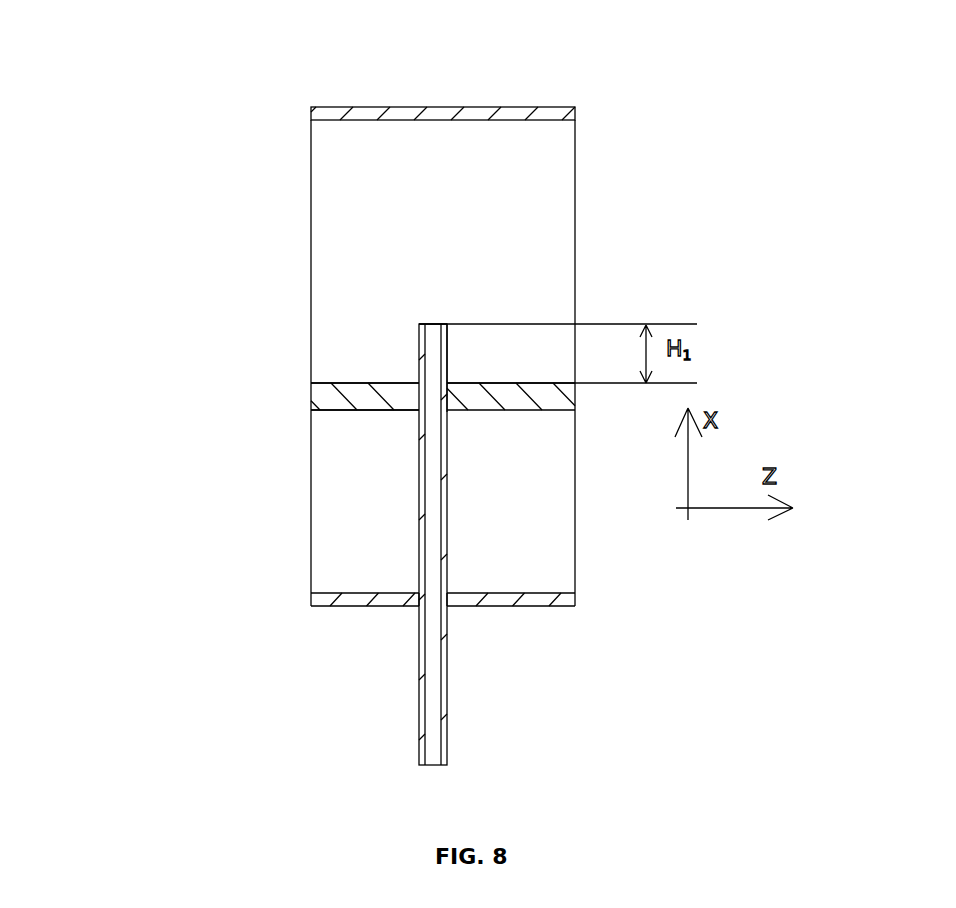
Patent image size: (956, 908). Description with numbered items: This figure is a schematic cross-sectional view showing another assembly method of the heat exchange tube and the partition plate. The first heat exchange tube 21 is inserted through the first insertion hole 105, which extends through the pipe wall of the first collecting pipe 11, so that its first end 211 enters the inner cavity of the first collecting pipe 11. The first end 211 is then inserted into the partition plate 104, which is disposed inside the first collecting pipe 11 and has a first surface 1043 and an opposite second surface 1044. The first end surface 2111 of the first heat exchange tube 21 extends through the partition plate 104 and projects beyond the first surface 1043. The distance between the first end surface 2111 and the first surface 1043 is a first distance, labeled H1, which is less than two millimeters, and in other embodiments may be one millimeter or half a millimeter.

The first collecting pipe 11 is at (463, 108).
The partition plate 104 is at (362, 397).
The first surface 1043 is at (370, 383).
The second surface 1044 is at (397, 411).
The first heat exchange tube 21 is at (448, 688).
The first end surface 2111 is at (436, 318).
The first end 211 is at (447, 410).
The first insertion hole 105 is at (447, 613).